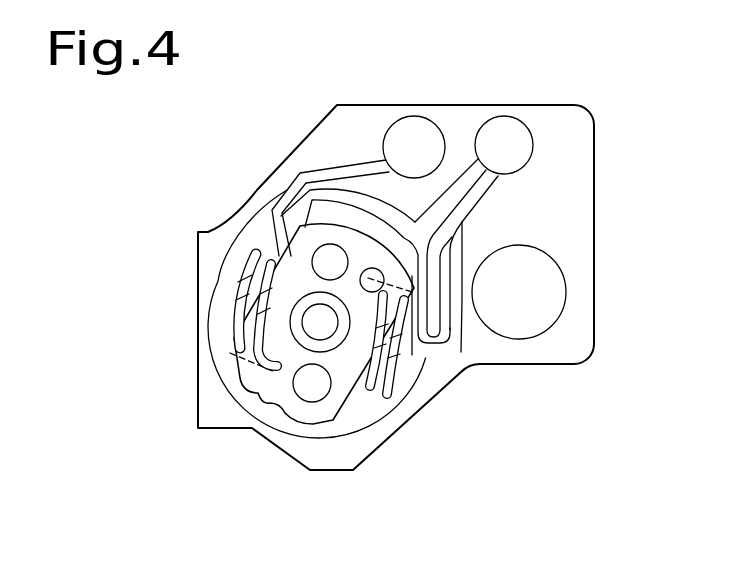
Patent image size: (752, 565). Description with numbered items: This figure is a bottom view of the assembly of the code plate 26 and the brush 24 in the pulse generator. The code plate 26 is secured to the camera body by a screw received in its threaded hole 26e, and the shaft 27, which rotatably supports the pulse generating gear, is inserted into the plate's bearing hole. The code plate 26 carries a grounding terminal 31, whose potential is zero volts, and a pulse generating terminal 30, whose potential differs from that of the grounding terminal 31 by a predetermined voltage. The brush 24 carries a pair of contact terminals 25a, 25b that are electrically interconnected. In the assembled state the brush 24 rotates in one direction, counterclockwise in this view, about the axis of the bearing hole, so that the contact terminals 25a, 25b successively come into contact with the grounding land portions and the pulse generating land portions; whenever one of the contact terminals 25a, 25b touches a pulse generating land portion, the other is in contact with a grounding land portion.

The code plate 26 is at (573, 106).
The threaded hole 26e is at (537, 300).
The shaft 27 is at (317, 325).
The contact terminal 25b is at (235, 313).
The contact terminal 25a is at (428, 370).
The pulse generating terminal 30 is at (449, 351).
The brush 24 is at (260, 395).
The grounding terminal 31 is at (380, 403).